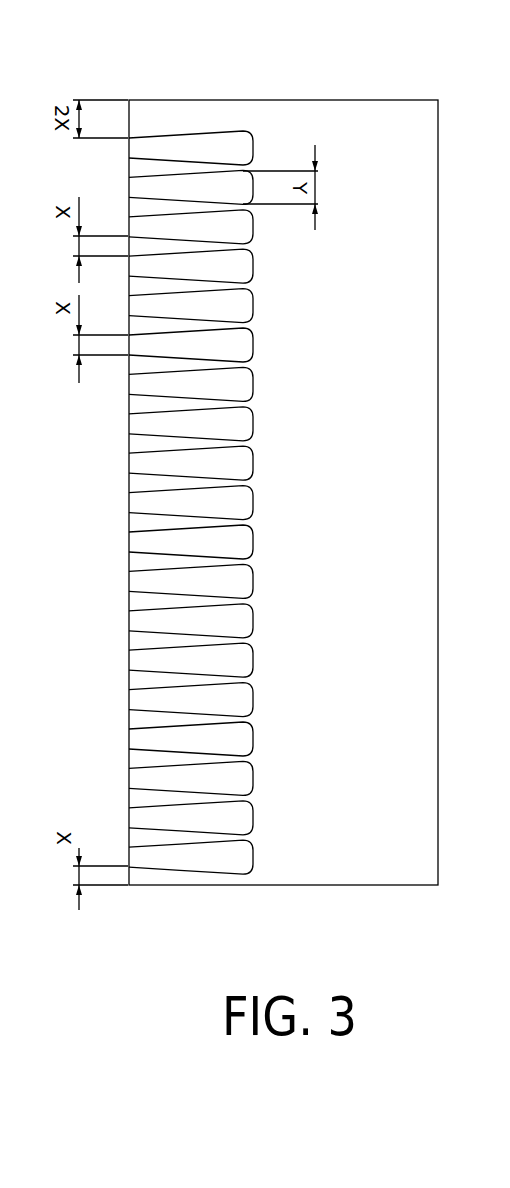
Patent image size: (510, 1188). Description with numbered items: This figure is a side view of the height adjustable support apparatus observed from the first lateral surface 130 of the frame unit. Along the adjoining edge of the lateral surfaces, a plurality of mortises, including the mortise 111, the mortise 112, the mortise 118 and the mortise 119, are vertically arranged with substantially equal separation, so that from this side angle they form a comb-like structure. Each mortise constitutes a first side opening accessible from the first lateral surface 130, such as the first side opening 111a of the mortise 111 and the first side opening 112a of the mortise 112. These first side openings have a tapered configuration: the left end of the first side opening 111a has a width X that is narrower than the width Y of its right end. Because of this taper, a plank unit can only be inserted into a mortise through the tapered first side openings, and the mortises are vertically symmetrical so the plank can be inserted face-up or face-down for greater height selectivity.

The first lateral surface 130 is at (353, 137).
The mortise 119 is at (177, 153).
The mortise 118 is at (148, 186).
The mortise 112 is at (181, 815).
The first side opening 112a is at (150, 813).
The mortise 111 is at (226, 894).
The first side opening 111a is at (160, 862).